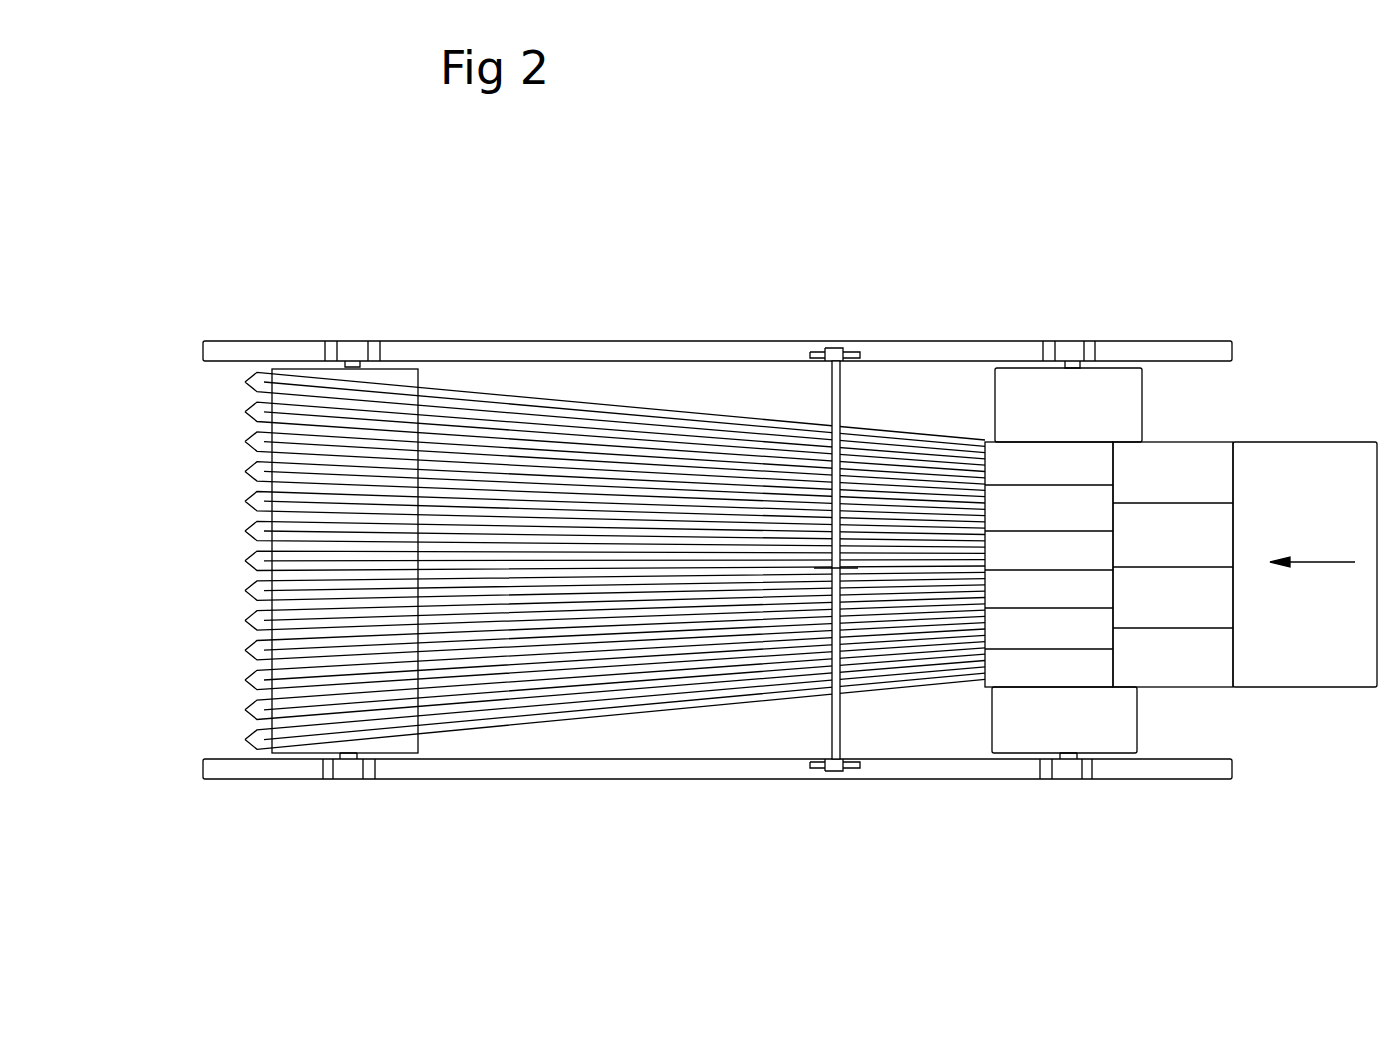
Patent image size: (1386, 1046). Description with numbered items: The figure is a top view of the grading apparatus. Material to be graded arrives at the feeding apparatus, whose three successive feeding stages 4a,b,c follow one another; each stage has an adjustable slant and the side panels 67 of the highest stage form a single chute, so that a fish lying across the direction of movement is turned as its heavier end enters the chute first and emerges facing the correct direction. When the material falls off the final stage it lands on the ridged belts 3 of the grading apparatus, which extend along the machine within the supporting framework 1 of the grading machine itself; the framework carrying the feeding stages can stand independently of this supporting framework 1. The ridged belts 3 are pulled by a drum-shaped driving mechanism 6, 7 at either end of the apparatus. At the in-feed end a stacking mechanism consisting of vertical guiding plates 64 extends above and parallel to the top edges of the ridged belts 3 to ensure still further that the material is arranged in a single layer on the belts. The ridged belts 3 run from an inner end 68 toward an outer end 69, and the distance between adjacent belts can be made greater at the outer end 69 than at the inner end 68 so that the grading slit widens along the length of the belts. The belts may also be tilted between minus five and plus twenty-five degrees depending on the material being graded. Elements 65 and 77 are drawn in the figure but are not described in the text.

The supporting framework 1 is at (483, 341).
The ridged belts 3 is at (560, 396).
The drum-shaped driving mechanism 6 is at (396, 372).
The drum-shaped driving mechanism 7 is at (1020, 735).
The vertical guiding plates 64 is at (905, 432).
The guide rod 65 is at (830, 388).
The side panels 67 is at (1200, 504).
The inner end 68 is at (312, 792).
The outer end 69 is at (948, 803).
The plug unit 77 is at (1318, 555).
The feeding stages 4a,b,c is at (1088, 670).